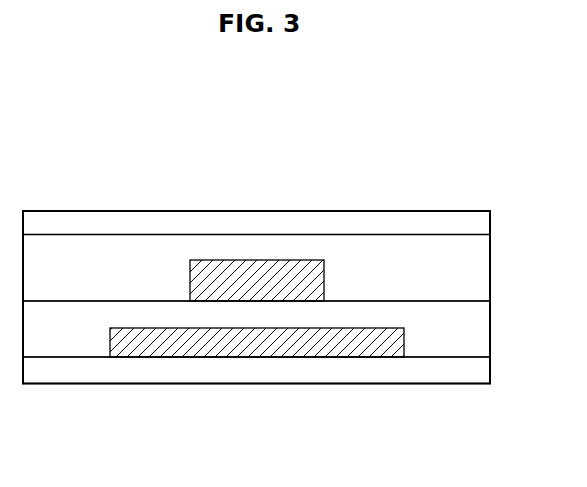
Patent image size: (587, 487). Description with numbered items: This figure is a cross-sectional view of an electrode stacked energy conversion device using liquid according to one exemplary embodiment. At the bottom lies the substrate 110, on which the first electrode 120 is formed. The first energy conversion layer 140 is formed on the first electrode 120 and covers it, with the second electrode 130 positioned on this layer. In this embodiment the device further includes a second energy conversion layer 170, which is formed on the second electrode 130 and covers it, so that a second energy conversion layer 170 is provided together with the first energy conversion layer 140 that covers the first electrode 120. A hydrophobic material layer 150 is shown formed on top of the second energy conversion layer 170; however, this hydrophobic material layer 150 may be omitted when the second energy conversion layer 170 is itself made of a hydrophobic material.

The substrate 110 is at (480, 370).
The first electrode 120 is at (378, 352).
The second electrode 130 is at (298, 265).
The energy conversion layer 140 is at (480, 323).
The hydrophobic material layer 150 is at (480, 222).
The second energy conversion layer 170 is at (480, 270).